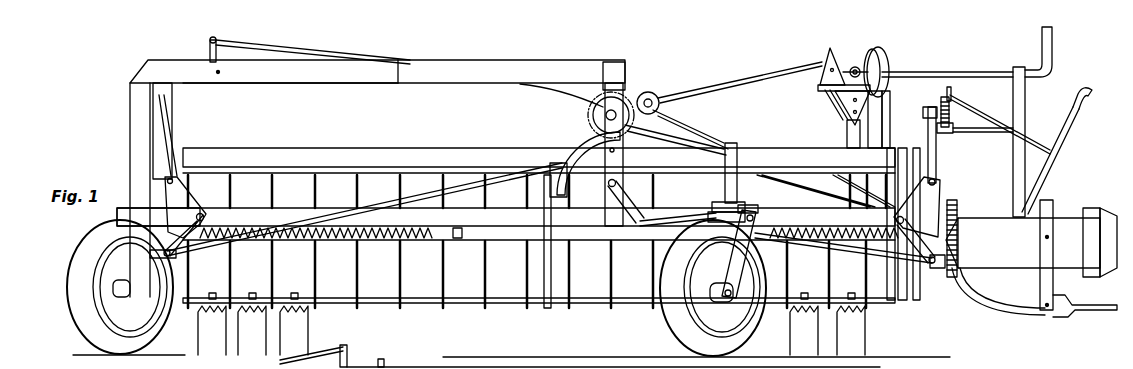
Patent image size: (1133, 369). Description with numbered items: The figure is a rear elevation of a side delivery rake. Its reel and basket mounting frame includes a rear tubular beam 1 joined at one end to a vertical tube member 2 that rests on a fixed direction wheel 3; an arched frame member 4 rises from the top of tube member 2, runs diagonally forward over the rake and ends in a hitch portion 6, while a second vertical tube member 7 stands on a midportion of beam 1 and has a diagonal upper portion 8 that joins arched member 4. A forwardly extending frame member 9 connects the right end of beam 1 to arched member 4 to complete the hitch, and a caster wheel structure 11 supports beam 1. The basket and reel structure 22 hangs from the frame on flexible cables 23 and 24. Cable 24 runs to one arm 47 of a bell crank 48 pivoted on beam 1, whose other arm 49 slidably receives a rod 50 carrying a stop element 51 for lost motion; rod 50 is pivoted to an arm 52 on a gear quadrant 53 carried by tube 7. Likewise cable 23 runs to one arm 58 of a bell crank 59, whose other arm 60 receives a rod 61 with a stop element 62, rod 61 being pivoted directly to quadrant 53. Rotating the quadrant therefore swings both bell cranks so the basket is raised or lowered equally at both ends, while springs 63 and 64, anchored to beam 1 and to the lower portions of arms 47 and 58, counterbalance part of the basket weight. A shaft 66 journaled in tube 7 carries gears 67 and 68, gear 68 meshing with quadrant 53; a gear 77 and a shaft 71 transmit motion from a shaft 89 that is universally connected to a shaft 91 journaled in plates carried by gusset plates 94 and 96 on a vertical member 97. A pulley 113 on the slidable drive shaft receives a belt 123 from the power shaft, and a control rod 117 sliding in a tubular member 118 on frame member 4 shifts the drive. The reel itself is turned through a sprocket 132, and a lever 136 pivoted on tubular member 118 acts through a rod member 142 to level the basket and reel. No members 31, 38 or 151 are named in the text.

The rear tubular beam 1 is at (513, 228).
The vertical tube member 2 is at (130, 150).
The fixed direction wheel 3 is at (68, 308).
The arched frame member 4 is at (326, 84).
The hitch portion 6 is at (1080, 313).
The vertical tube member 7 is at (610, 228).
The upper portion 8 is at (515, 65).
The forwardly extending frame member 9 is at (990, 303).
The caster wheel structure 11 is at (670, 330).
The basket and reel structure 22 is at (520, 306).
The flexible cable 23 is at (171, 138).
The flexible cable 24 is at (938, 152).
The horizontal frame beam 31 is at (440, 151).
The tines 38 is at (443, 277).
The arm 47 is at (929, 182).
The bell crank 48 is at (896, 220).
The arm 49 is at (925, 258).
The rod 50 is at (800, 248).
The stop element 51 is at (936, 268).
The arm 52 is at (630, 202).
The gear quadrant 53 is at (572, 150).
The arm 58 is at (192, 198).
The bell crank 59 is at (206, 217).
The arm 60 is at (170, 214).
The rod 61 is at (392, 202).
The stop element 62 is at (180, 258).
The spring 63 is at (846, 245).
The spring 64 is at (345, 239).
The shaft 66 is at (606, 115).
The gear 67 is at (632, 127).
The gear 68 is at (600, 104).
The shaft 71 is at (650, 94).
The gear 77 is at (665, 113).
The shaft 89 is at (745, 78).
The shaft 91 is at (830, 58).
The gusset plate 94 is at (840, 112).
The gusset plate 96 is at (828, 96).
The vertical member 97 is at (847, 140).
The pulley 113 is at (885, 62).
The control rod 117 is at (970, 73).
The tubular member 118 is at (1015, 104).
The belt 123 is at (886, 108).
The sprocket 132 is at (958, 246).
The lever 136 is at (1058, 126).
The rod member 142 is at (330, 58).
The cable 151 is at (955, 102).